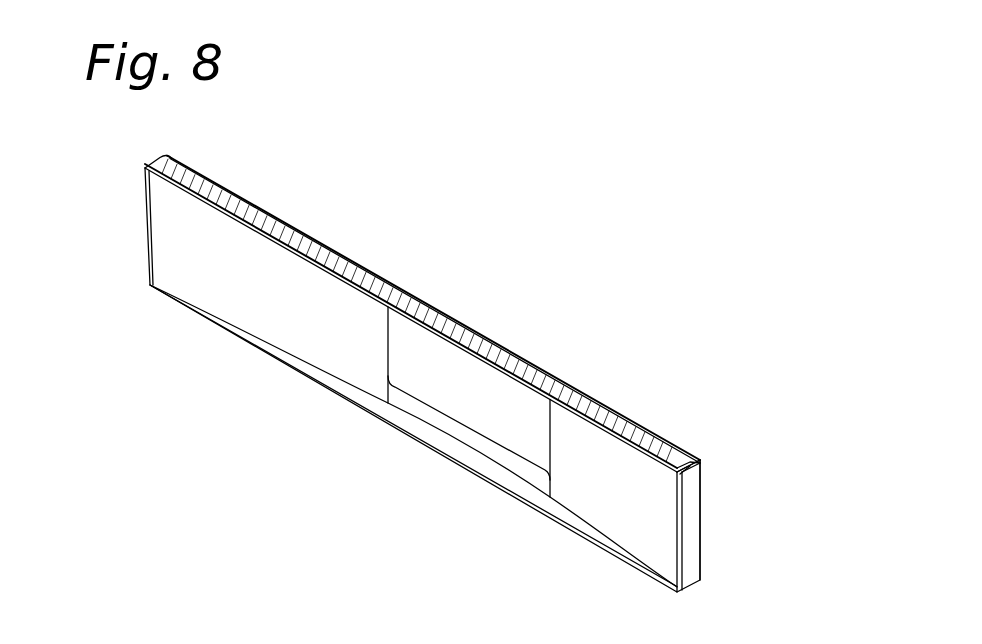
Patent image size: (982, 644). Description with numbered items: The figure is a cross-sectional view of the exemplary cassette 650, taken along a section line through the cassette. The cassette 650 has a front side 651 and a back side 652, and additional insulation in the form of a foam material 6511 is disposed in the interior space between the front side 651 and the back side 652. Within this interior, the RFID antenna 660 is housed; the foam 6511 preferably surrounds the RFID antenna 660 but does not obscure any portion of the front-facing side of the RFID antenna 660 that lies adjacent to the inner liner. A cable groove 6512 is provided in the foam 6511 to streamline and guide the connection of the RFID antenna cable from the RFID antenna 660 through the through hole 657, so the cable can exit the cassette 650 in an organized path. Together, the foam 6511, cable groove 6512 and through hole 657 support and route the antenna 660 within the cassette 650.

The cassette 650 is at (688, 214).
The front side 651 is at (187, 283).
The back side 652 is at (308, 237).
The foam 6511 is at (202, 190).
The cable groove 6512 is at (684, 471).
The through hole 657 is at (697, 472).
The RFID antenna 660 is at (467, 368).